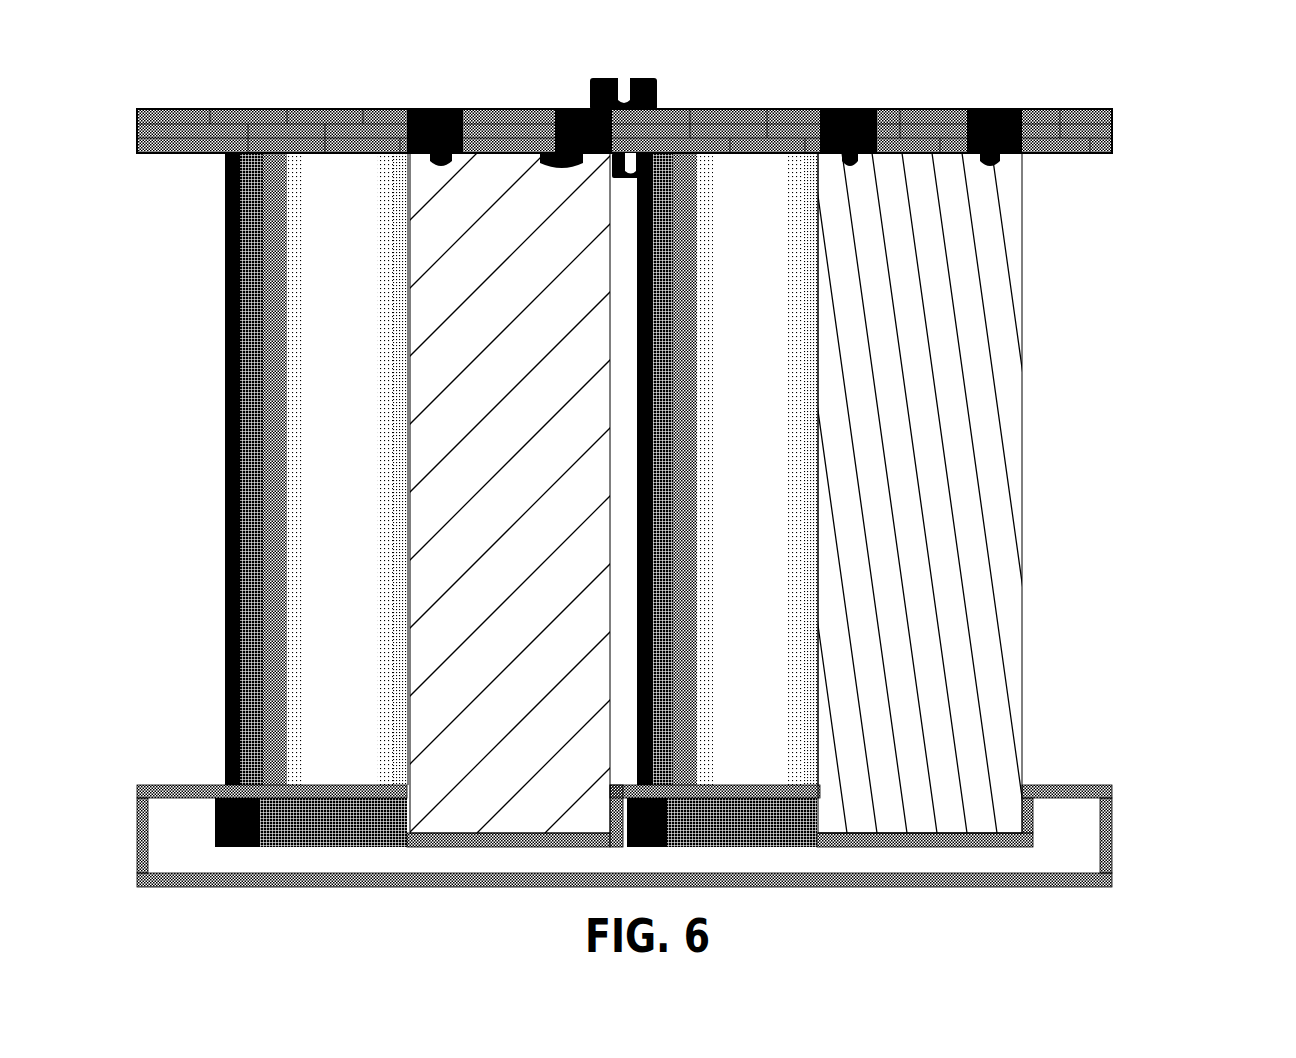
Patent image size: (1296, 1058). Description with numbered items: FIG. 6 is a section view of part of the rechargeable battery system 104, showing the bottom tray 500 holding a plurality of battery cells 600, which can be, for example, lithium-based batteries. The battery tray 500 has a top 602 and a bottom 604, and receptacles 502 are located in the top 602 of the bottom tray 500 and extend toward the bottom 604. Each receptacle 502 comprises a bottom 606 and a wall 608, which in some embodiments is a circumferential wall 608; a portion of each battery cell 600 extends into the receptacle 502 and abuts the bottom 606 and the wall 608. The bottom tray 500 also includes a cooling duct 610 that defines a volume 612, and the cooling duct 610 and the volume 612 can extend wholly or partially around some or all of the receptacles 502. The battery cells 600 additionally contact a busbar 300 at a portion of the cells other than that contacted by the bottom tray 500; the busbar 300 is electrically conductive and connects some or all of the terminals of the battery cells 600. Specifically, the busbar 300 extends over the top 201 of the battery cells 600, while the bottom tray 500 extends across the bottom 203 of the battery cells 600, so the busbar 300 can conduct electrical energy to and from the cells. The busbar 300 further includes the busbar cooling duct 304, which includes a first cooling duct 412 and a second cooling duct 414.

The rechargeable battery system 104 is at (646, 504).
The top of the battery cells 201 is at (314, 100).
The bottom of the battery cells 203 is at (317, 868).
The busbar 300 is at (164, 195).
The busbar cooling duct 304 is at (615, 129).
The first cooling duct 412 is at (657, 86).
The second cooling duct 414 is at (612, 170).
The bottom tray 500 is at (665, 826).
The receptacle 502 is at (942, 797).
The battery cell 600 is at (1027, 365).
The top of the battery tray 602 is at (1067, 752).
The bottom of the battery tray 604 is at (1058, 911).
The bottom of the receptacle 606 is at (952, 837).
The wall of the receptacle 608 is at (817, 812).
The cooling duct 610 is at (150, 785).
The volume 612 is at (1085, 840).